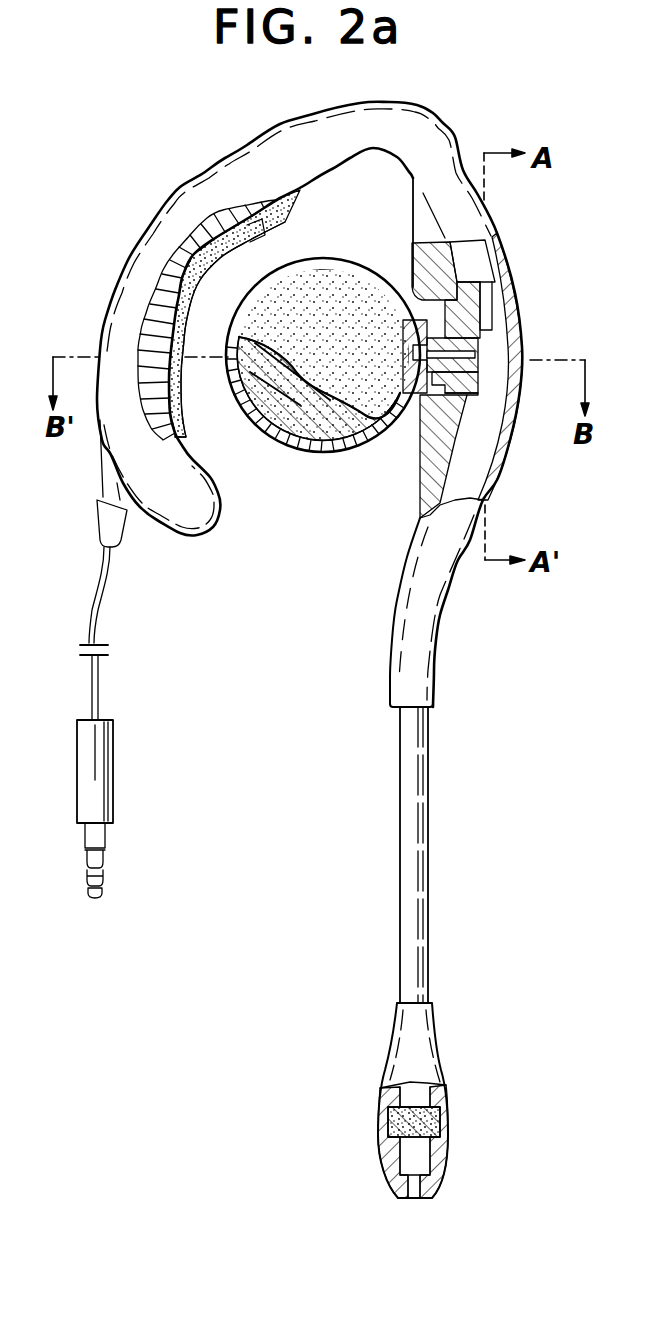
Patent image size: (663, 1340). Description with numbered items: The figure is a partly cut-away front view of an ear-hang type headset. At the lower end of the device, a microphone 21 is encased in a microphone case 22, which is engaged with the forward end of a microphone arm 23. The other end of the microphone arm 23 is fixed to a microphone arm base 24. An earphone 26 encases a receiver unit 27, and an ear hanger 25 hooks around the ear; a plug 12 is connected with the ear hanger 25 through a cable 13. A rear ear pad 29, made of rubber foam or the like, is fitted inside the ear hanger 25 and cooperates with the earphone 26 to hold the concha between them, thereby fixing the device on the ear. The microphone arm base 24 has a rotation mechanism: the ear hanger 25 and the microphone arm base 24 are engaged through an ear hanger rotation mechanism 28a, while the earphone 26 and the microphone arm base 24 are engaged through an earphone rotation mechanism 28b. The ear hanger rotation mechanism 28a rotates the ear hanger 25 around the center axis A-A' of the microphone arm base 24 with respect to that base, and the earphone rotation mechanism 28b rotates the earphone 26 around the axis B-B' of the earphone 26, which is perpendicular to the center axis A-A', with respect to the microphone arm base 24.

The plug 12 is at (113, 802).
The cable 13 is at (107, 590).
The microphone 21 is at (440, 1130).
The microphone case 22 is at (395, 1060).
The microphone arm 23 is at (430, 845).
The microphone arm base 24 is at (437, 633).
The ear hanger 25 is at (415, 118).
The earphone 26 is at (320, 290).
The receiver unit 27 is at (325, 428).
The ear hanger rotation mechanism 28a is at (497, 300).
The earphone rotation mechanism 28b is at (470, 356).
The rear ear pad 29 is at (182, 387).